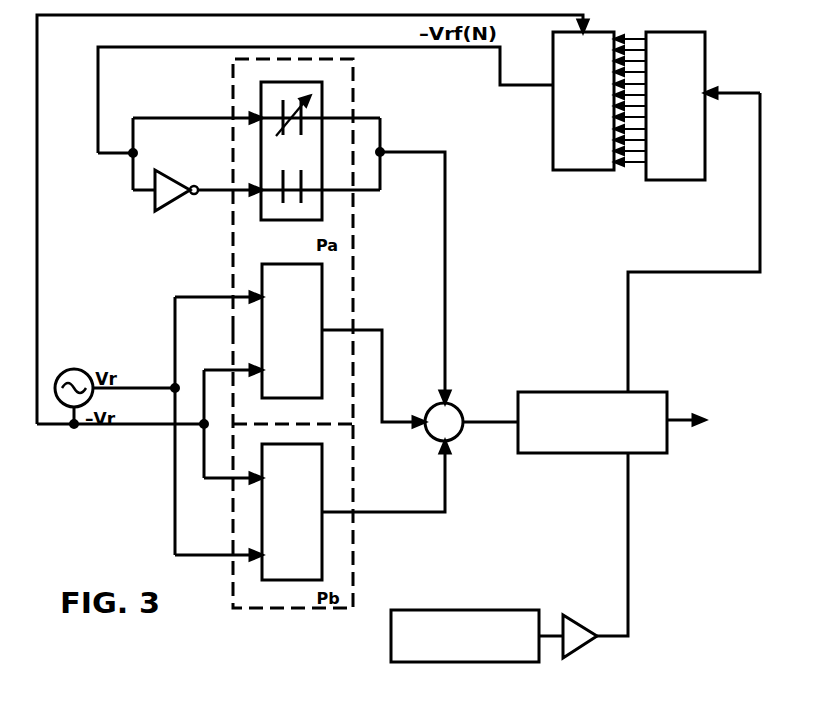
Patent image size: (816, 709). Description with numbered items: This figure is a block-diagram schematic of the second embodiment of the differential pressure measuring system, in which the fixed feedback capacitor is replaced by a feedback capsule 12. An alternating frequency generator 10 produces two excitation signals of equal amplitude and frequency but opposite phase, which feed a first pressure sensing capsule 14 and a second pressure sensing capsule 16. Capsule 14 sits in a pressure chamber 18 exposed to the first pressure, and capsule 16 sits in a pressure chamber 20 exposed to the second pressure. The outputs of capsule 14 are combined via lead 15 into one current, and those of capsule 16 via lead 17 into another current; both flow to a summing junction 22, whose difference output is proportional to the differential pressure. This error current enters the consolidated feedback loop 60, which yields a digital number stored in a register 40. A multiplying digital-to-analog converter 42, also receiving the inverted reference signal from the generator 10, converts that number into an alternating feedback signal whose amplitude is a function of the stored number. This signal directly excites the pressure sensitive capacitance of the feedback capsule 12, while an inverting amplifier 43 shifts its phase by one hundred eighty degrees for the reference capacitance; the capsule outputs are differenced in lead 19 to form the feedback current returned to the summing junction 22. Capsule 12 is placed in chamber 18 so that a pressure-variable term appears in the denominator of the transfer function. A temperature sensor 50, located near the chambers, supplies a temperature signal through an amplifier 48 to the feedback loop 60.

The alternating frequency generator 10 is at (74, 369).
The feedback capsule 12 is at (280, 81).
The first pressure sensing capsule 14 is at (284, 263).
The lead 15 is at (383, 355).
The second pressure sensing capsule 16 is at (284, 443).
The lead 17 is at (446, 472).
The pressure chamber 18 is at (353, 93).
The lead 19 is at (445, 172).
The pressure chamber 20 is at (236, 610).
The summing junction 22 is at (460, 406).
The register 40 is at (700, 175).
The multiplying digital-to-analog converter 42 is at (556, 170).
The inverting amplifier 43 is at (172, 205).
The amplifier 48 is at (590, 622).
The temperature sensor 50 is at (400, 653).
The feedback loop 60 is at (655, 440).